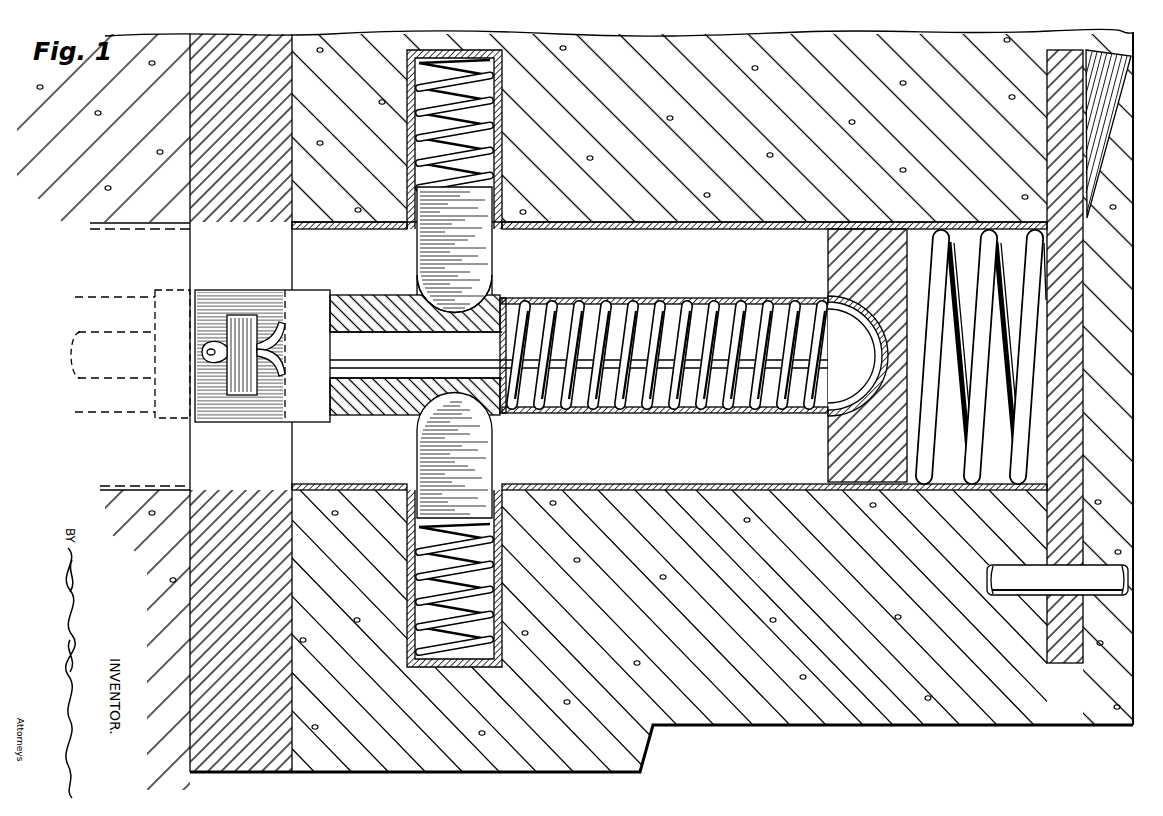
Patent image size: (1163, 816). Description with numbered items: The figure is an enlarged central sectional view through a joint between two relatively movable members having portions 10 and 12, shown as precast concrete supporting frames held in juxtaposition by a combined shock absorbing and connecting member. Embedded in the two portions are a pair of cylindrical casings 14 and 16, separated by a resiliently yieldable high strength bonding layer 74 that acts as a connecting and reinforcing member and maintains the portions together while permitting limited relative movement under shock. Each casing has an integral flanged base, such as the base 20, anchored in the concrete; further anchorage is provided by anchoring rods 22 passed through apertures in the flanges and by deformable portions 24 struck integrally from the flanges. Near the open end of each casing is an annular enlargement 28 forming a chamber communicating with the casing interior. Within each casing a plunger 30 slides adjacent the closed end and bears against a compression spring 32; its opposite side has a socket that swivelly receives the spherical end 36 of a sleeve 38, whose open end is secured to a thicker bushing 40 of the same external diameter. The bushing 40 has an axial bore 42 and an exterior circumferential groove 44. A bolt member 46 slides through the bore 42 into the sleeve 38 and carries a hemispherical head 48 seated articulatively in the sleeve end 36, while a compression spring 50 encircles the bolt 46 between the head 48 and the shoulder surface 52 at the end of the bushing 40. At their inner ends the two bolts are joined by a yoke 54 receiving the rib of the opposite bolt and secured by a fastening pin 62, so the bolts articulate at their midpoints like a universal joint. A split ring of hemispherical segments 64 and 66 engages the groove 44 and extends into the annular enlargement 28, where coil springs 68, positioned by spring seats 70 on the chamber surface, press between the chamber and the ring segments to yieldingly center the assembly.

The portion of relatively movable member 10 is at (92, 184).
The portion of relatively movable member 12 is at (722, 708).
The casing / cylindrical sleeve 14 is at (166, 231).
The casing / cylindrical sleeve 16 is at (629, 485).
The flanged base 20 is at (1086, 252).
The anchoring rod 22 is at (1017, 587).
The deformable portion 24 is at (1105, 135).
The annular enlargement 28 is at (497, 166).
The plunger 30 is at (840, 265).
The compression spring 32 is at (945, 244).
The spherical end of sleeve 36 is at (868, 303).
The sleeve 38 is at (668, 300).
The bushing 40 is at (373, 303).
The axial bore 42 is at (352, 325).
The circumferential groove 44 is at (437, 308).
The bolt member 46 is at (114, 368).
The hemispherical head 48 is at (823, 413).
The compression spring 50 is at (726, 300).
The shoulder or abutment surface 52 is at (172, 292).
The U-shaped head or yoke 54 is at (304, 307).
The fastening pin 62 is at (240, 322).
The ring segment 64 is at (486, 249).
The ring segment 66 is at (485, 477).
The coil spring 68 is at (486, 126).
The spring seat 70 is at (482, 62).
The resilient bonding layer 74 is at (256, 506).